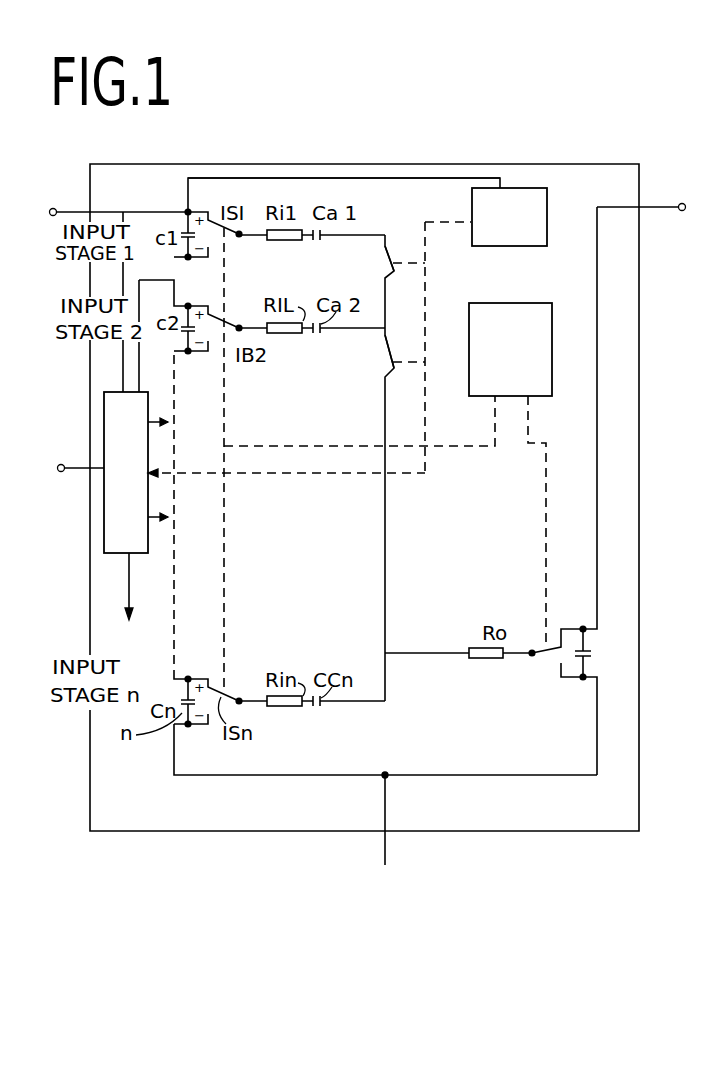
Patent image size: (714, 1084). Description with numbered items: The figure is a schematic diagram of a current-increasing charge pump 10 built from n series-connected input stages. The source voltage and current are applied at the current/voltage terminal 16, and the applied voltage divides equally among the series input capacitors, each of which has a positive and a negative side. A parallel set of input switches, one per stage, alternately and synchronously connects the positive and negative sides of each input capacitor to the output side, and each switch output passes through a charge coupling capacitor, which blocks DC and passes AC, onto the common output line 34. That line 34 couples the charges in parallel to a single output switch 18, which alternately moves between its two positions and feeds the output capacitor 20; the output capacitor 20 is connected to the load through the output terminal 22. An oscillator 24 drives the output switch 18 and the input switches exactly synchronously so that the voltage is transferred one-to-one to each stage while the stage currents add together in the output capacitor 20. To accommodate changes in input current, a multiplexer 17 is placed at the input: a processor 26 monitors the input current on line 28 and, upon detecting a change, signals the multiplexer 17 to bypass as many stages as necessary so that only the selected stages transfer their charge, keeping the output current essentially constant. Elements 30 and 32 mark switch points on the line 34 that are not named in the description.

The charge pump 10 is at (508, 164).
The current/voltage terminal 16 is at (53, 208).
The multiplexer 17 is at (112, 392).
The output switch 18 is at (546, 652).
The output capacitor 20 is at (589, 664).
The output terminal 22 is at (682, 203).
The oscillator 24 is at (513, 303).
The processor 26 is at (547, 213).
The line 28 is at (392, 179).
The bus switch 30 is at (390, 261).
The bus switch 32 is at (390, 363).
The output line 34 is at (385, 541).